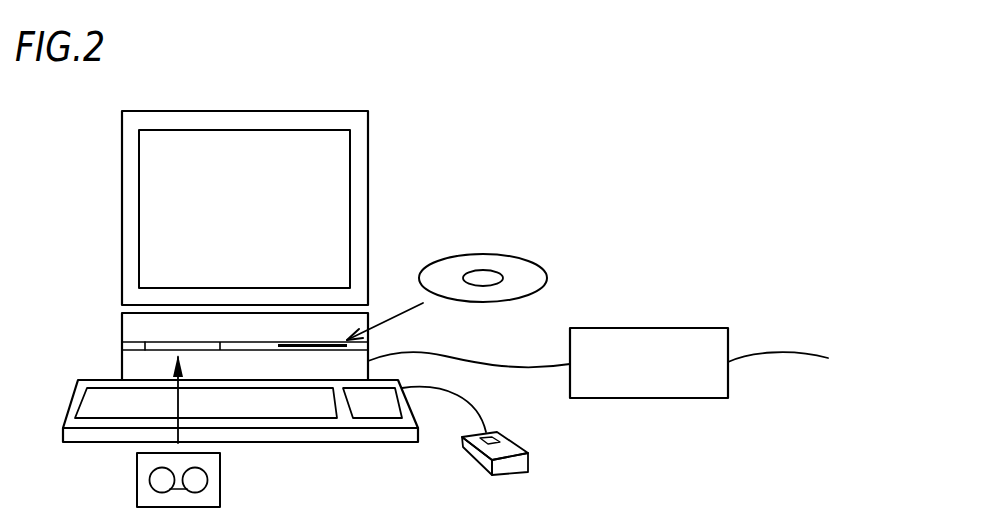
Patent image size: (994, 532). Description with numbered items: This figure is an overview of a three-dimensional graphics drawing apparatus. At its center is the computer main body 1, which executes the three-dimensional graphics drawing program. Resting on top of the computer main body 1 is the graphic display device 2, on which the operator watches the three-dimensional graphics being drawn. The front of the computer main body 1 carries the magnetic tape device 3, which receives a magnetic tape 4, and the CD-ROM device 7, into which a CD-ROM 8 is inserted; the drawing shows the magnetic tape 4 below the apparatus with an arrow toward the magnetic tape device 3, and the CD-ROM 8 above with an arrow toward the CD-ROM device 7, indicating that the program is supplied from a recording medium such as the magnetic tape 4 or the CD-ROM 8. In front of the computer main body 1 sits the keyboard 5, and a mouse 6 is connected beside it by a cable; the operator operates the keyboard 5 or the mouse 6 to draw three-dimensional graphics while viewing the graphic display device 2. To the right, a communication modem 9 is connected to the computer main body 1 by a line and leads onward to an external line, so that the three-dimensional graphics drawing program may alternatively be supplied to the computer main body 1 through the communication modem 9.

The computer main body 1 is at (122, 326).
The graphic display device 2 is at (122, 193).
The magnetic tape device 3 is at (153, 348).
The magnetic tape 4 is at (137, 480).
The keyboard 5 is at (332, 442).
The mouse 6 is at (530, 457).
The CD-ROM device 7 is at (300, 348).
The CD-ROM 8 is at (535, 276).
The communication modem 9 is at (647, 328).